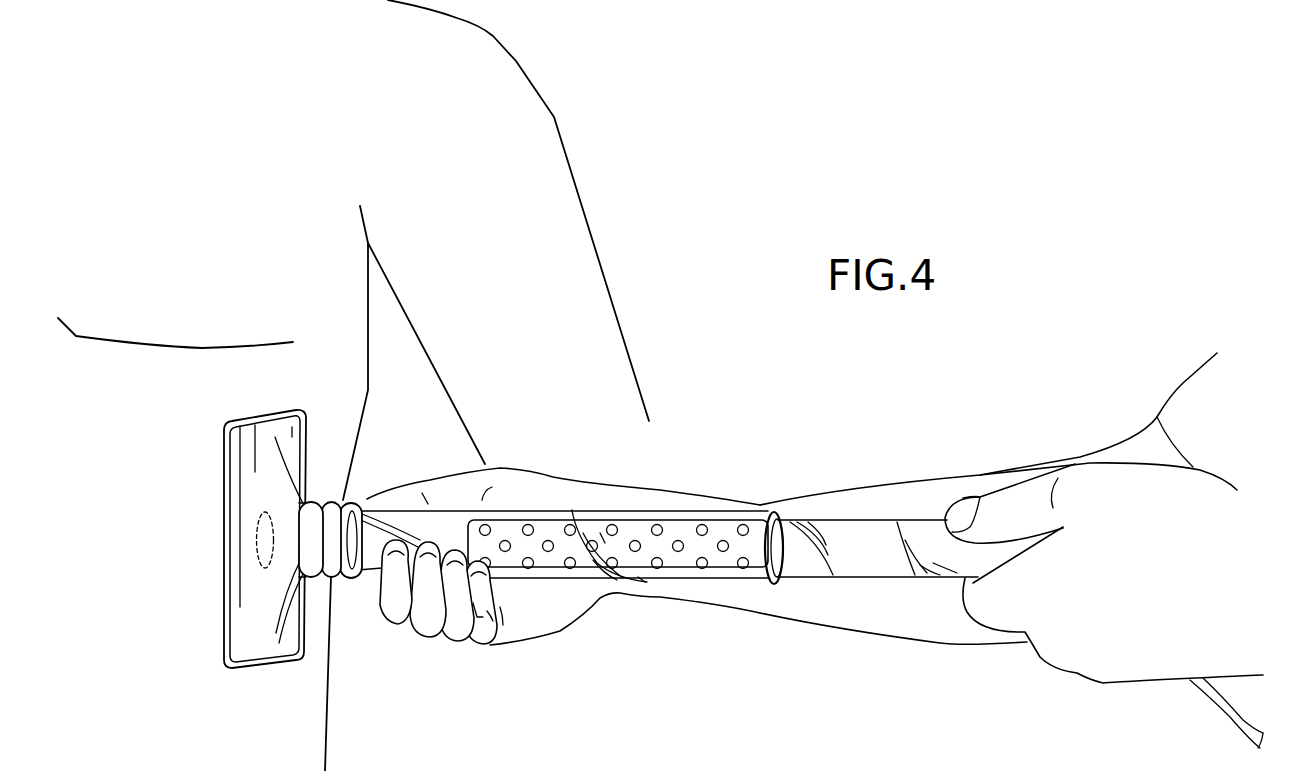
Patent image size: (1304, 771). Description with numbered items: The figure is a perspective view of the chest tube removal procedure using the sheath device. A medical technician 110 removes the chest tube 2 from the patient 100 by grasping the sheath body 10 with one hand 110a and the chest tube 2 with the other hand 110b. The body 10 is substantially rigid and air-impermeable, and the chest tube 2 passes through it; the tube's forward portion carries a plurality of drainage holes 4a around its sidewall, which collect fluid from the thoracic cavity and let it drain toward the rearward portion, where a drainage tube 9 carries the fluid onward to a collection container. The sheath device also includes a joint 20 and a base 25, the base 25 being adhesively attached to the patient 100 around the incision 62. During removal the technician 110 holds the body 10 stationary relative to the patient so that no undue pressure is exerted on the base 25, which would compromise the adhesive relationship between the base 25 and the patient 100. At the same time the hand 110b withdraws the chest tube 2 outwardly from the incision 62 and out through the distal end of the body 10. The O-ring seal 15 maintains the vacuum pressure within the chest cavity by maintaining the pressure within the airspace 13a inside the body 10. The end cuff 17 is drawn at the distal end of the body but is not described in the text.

The patient 100 is at (485, 93).
The medical technician 110 is at (1203, 402).
The hand 110a is at (507, 510).
The hand 110b is at (1163, 518).
The airspace 13a is at (455, 530).
The body 10 is at (684, 515).
The drainage holes 4a is at (701, 569).
The end cuff 17 is at (780, 518).
The seal 15 is at (780, 580).
The chest tube 2 is at (883, 552).
The joint 20 is at (348, 576).
The base 25 is at (246, 640).
The incision 62 is at (253, 518).
The drainage tube 9 is at (1217, 703).